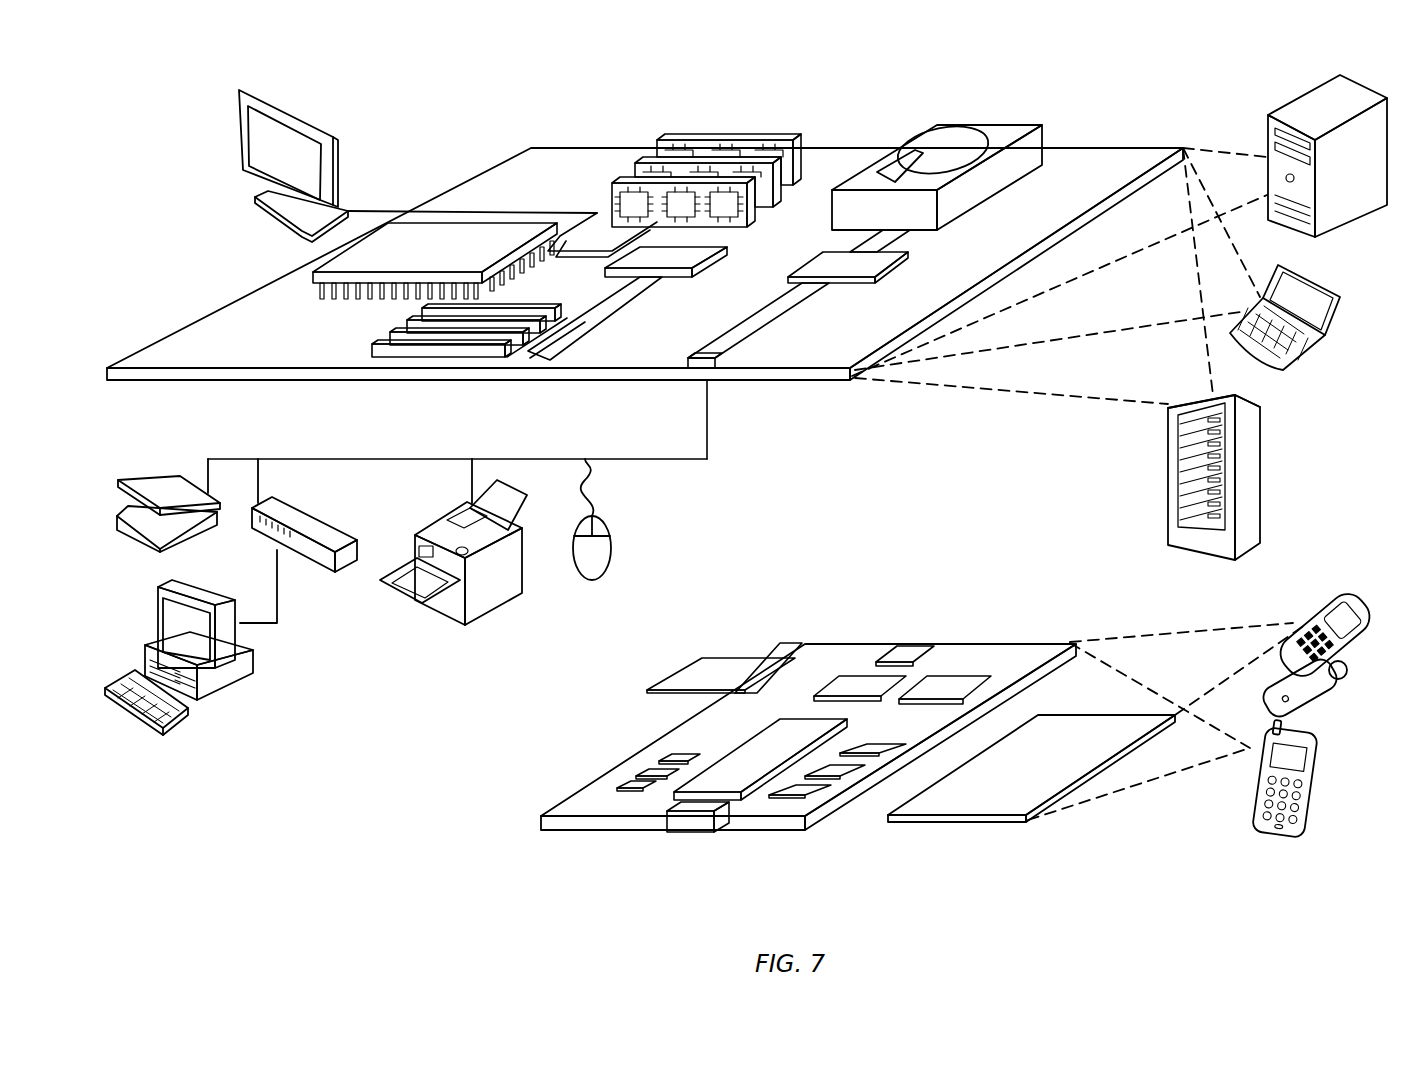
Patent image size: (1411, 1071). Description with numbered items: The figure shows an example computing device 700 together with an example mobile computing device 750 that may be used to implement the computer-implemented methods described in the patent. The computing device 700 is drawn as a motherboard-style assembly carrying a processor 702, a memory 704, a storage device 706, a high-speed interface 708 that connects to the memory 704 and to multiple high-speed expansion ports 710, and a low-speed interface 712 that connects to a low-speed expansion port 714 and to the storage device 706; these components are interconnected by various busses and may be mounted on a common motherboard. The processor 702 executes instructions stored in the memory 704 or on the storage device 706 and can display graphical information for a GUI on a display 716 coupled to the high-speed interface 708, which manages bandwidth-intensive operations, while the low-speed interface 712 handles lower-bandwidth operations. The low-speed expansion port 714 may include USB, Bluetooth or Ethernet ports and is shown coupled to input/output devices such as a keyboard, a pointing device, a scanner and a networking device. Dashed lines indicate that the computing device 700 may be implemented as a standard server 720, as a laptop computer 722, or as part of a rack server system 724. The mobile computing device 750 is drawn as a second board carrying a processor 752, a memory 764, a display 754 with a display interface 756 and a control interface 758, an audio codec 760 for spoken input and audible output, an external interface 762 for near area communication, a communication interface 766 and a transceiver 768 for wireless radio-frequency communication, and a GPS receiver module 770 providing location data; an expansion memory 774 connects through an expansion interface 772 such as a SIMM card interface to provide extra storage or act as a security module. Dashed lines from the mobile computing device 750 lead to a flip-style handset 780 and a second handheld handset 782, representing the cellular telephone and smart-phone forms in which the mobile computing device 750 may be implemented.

The computing device 700 is at (452, 115).
The processor 702 is at (313, 276).
The memory 704 is at (668, 138).
The storage device 706 is at (917, 124).
The high-speed interface 708 is at (632, 256).
The high-speed expansion ports 710 is at (390, 337).
The low-speed interface 712 is at (833, 264).
The low-speed expansion port 714 is at (712, 376).
The display 716 is at (247, 86).
The standard server 720 is at (1267, 132).
The laptop computer 722 is at (1348, 290).
The rack server system 724 is at (1168, 502).
The mobile computing device 750 is at (512, 830).
The processor 752 is at (733, 784).
The display 754 is at (987, 804).
The display interface 756 is at (805, 792).
The control interface 758 is at (849, 772).
The audio codec 760 is at (870, 746).
The external interface 762 is at (693, 820).
The memory 764 is at (635, 773).
The communication interface 766 is at (860, 683).
The transceiver 768 is at (945, 683).
The GPS receiver module 770 is at (917, 646).
The expansion interface 772 is at (789, 656).
The expansion memory 774 is at (698, 657).
The flip mobile phone 780 is at (1320, 603).
The cellular phone 782 is at (1256, 790).